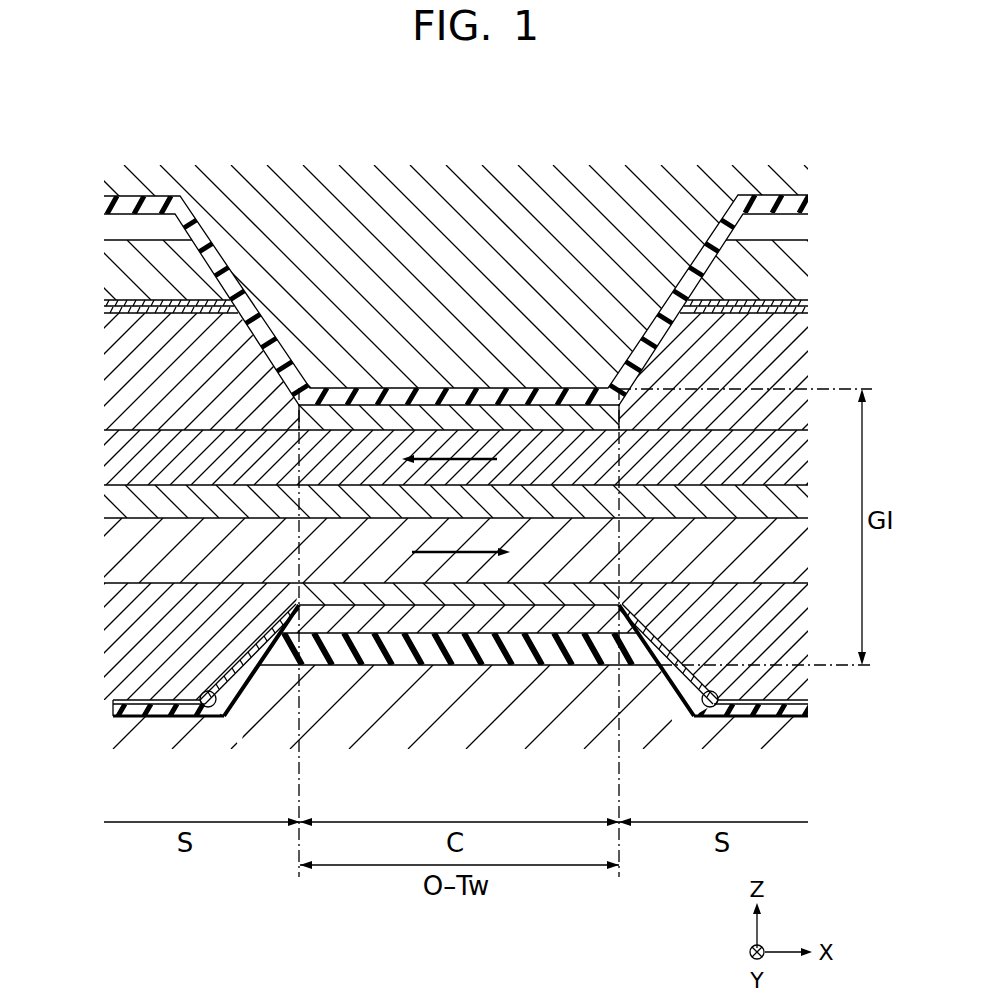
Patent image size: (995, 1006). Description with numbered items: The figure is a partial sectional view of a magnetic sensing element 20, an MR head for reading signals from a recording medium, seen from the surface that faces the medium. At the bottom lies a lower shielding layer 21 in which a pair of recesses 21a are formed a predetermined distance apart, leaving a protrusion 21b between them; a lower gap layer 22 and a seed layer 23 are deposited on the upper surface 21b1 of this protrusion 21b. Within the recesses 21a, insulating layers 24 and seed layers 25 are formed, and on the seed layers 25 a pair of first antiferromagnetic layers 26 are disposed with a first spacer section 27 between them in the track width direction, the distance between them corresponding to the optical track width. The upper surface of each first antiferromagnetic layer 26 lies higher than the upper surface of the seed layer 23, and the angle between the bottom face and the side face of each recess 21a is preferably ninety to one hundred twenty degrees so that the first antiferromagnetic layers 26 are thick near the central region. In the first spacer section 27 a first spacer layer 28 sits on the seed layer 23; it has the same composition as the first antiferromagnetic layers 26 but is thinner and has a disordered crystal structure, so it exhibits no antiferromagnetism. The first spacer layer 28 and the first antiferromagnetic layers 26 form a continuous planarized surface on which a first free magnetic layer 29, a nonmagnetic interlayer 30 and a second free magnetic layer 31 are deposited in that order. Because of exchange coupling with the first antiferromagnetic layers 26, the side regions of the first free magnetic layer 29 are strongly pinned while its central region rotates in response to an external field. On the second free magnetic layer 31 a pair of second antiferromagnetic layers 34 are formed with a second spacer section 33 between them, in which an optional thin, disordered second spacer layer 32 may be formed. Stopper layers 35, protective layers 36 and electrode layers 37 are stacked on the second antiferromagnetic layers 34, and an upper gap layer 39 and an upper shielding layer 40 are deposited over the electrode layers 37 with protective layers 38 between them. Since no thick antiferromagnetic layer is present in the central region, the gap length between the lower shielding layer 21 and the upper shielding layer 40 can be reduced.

The magnetic sensing element 20 is at (598, 158).
The lower shielding layer 21 is at (452, 706).
The recesses 21a is at (160, 718).
The protrusion 21b is at (575, 735).
The upper surface of protrusion 21b1 is at (636, 655).
The lower gap layer 22 is at (506, 652).
The seed layer 23 is at (447, 620).
The insulating layers 24 is at (113, 712).
The seed layers 25 is at (113, 700).
The first antiferromagnetic layers 26 is at (135, 636).
The first spacer section 27 is at (367, 600).
The first spacer layer 28 is at (412, 596).
The first free magnetic layer 29 is at (135, 552).
The nonmagnetic interlayer 30 is at (130, 500).
The second free magnetic layer 31 is at (135, 458).
The second spacer layer 32 is at (505, 412).
The second spacer section 33 is at (403, 400).
The second antiferromagnetic layers 34 is at (150, 390).
The stopper layers 35 is at (125, 310).
The protective layers 36 is at (112, 302).
The electrode layers 37 is at (137, 272).
The protective layers 38 is at (135, 228).
The upper gap layer 39 is at (806, 206).
The upper shielding layer 40 is at (800, 178).